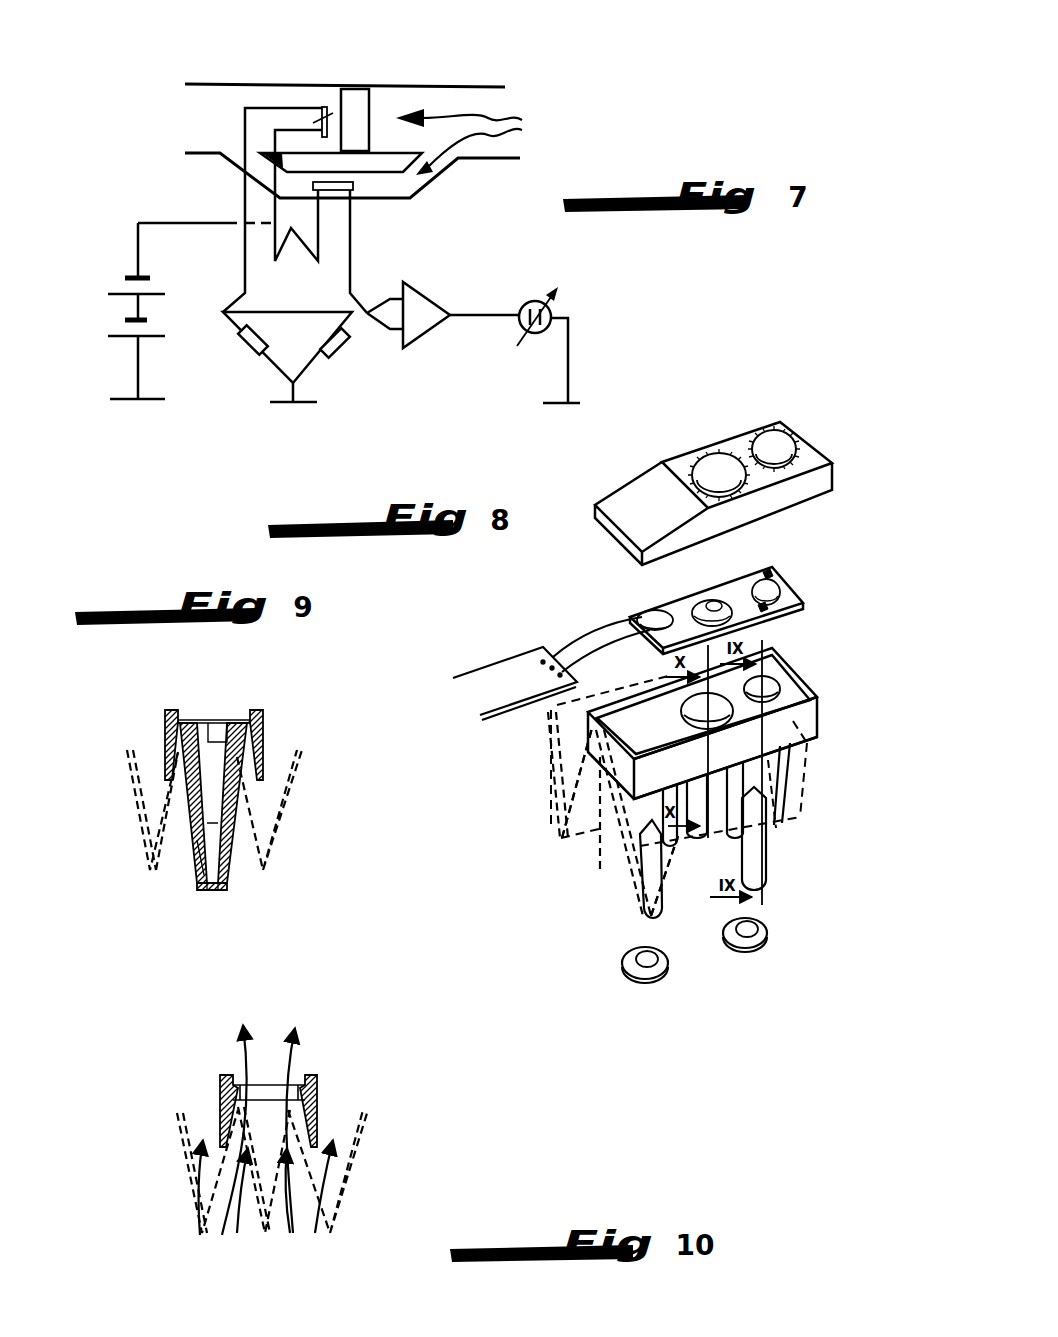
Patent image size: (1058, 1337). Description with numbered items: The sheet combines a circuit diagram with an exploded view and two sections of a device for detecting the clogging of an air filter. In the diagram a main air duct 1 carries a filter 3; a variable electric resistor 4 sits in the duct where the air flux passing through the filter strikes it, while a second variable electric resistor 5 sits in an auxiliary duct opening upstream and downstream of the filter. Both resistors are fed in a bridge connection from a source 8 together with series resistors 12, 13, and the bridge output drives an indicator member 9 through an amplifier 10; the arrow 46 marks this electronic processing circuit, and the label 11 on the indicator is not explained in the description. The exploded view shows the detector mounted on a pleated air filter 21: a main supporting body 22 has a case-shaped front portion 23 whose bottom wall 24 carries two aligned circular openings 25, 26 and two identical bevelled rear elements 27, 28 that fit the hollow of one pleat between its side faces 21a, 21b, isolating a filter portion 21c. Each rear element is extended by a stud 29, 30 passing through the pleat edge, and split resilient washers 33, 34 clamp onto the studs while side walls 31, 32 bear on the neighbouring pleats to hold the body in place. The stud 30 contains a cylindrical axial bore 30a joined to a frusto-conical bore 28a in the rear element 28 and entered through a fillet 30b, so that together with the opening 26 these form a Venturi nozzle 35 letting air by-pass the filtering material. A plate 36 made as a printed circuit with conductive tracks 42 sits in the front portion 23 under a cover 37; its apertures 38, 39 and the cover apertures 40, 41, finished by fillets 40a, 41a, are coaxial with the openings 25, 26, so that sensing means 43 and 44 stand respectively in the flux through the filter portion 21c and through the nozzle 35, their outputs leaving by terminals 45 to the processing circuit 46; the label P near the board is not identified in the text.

In FIG. 7, the air duct 1 is at (443, 87).
In FIG. 7, the filter 3 is at (377, 192).
In FIG. 7, the variable electric resistor 4 is at (323, 108).
In FIG. 7, the second variable electric resistor 5 is at (343, 178).
In FIG. 7, the source 8 is at (135, 302).
In FIG. 7, the indicator member 9 is at (527, 303).
In FIG. 7, the amplifier 10 is at (425, 298).
In FIG. 7, the display 11 is at (535, 318).
In FIG. 7, the resistor 12 is at (333, 353).
In FIG. 7, the resistor 13 is at (247, 345).
In FIG. 7, the air filter 21 is at (353, 107).
In FIG. 8, the air filter 21 is at (556, 823).
In FIG. 9, the air filter 21 is at (143, 793).
In FIG. 10, the air filter 21 is at (346, 1215).
In FIG. 8, the side face of fold 21a is at (603, 872).
In FIG. 9, the side face of fold 21a is at (185, 790).
In FIG. 8, the side face of fold 21b is at (621, 868).
In FIG. 9, the side face of fold 21b is at (235, 802).
In FIG. 8, the isolated portion of air filter 21c is at (767, 840).
In FIG. 8, the main supporting body 22 is at (740, 706).
In FIG. 9, the main supporting body 22 is at (181, 713).
In FIG. 10, the main supporting body 22 is at (270, 1058).
In FIG. 8, the case shaped front portion 23 is at (787, 660).
In FIG. 9, the case shaped front portion 23 is at (168, 720).
In FIG. 10, the case shaped front portion 23 is at (228, 1080).
In FIG. 8, the bottom forming wall 24 is at (565, 790).
In FIG. 8, the thoroughfare opening 25 is at (818, 740).
In FIG. 10, the thoroughfare opening 25 is at (290, 1080).
In FIG. 8, the thoroughfare opening 26 is at (817, 661).
In FIG. 9, the thoroughfare opening 26 is at (228, 722).
In FIG. 8, the rear element 27 is at (683, 866).
In FIG. 8, the rear element 28 is at (772, 790).
In FIG. 9, the rear element 28 is at (263, 765).
In FIG. 9, the frusto-conical bore 28a is at (210, 720).
In FIG. 8, the stud 29 is at (658, 894).
In FIG. 8, the stud 30 is at (767, 860).
In FIG. 9, the stud 30 is at (227, 901).
In FIG. 9, the cylindrical axial bore 30a is at (207, 857).
In FIG. 9, the fillet 30b is at (213, 890).
In FIG. 8, the side wall 31 is at (733, 747).
In FIG. 9, the side wall 31 is at (260, 770).
In FIG. 10, the side wall 31 is at (317, 1122).
In FIG. 8, the side wall 32 is at (637, 737).
In FIG. 9, the side wall 32 is at (167, 767).
In FIG. 10, the side wall 32 is at (223, 1127).
In FIG. 8, the split resilient washer 33 is at (650, 982).
In FIG. 8, the split resilient washer 34 is at (757, 952).
In FIG. 9, the Venturi nozzle 35 is at (198, 833).
In FIG. 8, the plate 36 is at (747, 589).
In FIG. 8, the cover 37 is at (733, 453).
In FIG. 8, the thoroughfare aperture 38 is at (718, 604).
In FIG. 8, the thoroughfare aperture 39 is at (778, 598).
In FIG. 8, the cylindrical aperture 40 is at (716, 468).
In FIG. 8, the fillet 40a is at (700, 463).
In FIG. 8, the cylindrical aperture 41 is at (774, 445).
In FIG. 8, the fillet 41a is at (790, 438).
In FIG. 8, the conductive tracks 42 is at (660, 612).
In FIG. 8, the sensing means 43 is at (714, 600).
In FIG. 8, the sensing means 44 is at (755, 578).
In FIG. 8, the terminals 45 is at (660, 618).
In FIG. 7, the electronic circuit 46 is at (345, 345).
In FIG. 8, the printed sheet P is at (497, 683).